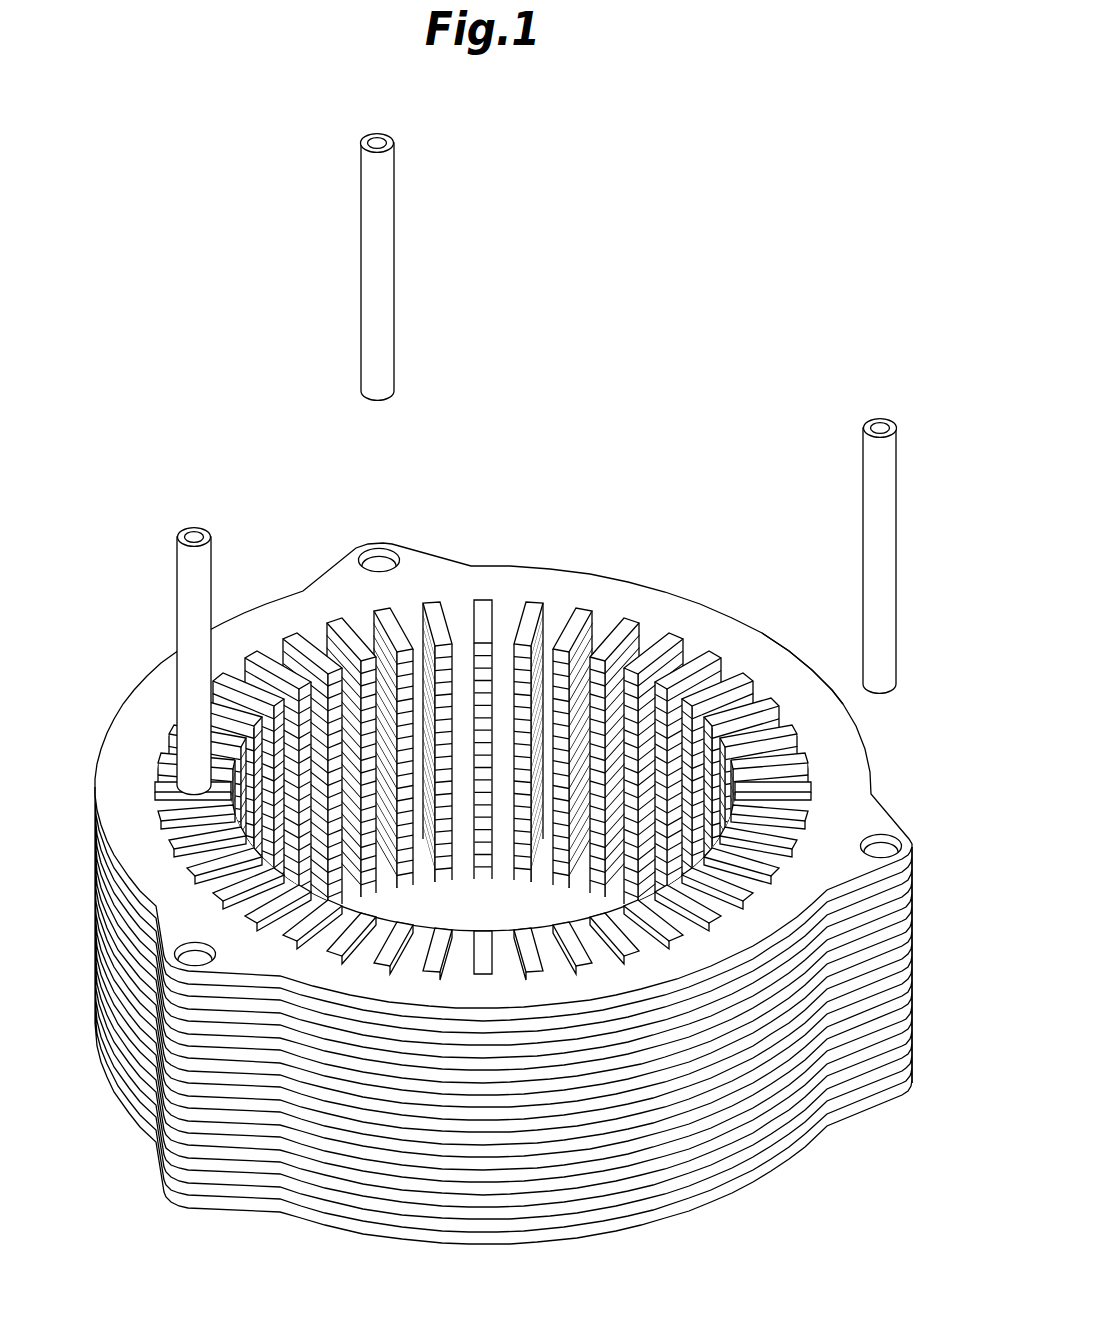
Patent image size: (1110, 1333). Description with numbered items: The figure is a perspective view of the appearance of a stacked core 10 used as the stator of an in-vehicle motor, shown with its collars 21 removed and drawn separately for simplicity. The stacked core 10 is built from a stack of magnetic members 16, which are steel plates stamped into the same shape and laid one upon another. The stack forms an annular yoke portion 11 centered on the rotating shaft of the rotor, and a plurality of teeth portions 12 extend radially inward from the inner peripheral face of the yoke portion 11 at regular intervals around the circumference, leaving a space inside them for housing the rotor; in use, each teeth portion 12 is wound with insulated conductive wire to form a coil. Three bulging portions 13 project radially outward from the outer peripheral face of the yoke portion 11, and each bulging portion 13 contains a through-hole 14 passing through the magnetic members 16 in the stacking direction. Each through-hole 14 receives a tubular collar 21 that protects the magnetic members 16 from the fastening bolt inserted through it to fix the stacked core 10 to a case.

The stacked core 10 is at (795, 318).
The yoke portion 11 is at (666, 626).
The teeth portions 12 is at (607, 638).
The bulging portions 13 is at (353, 556).
The through-hole 14 is at (380, 549).
The magnetic members 16 is at (742, 614).
The collars 21 is at (380, 247).